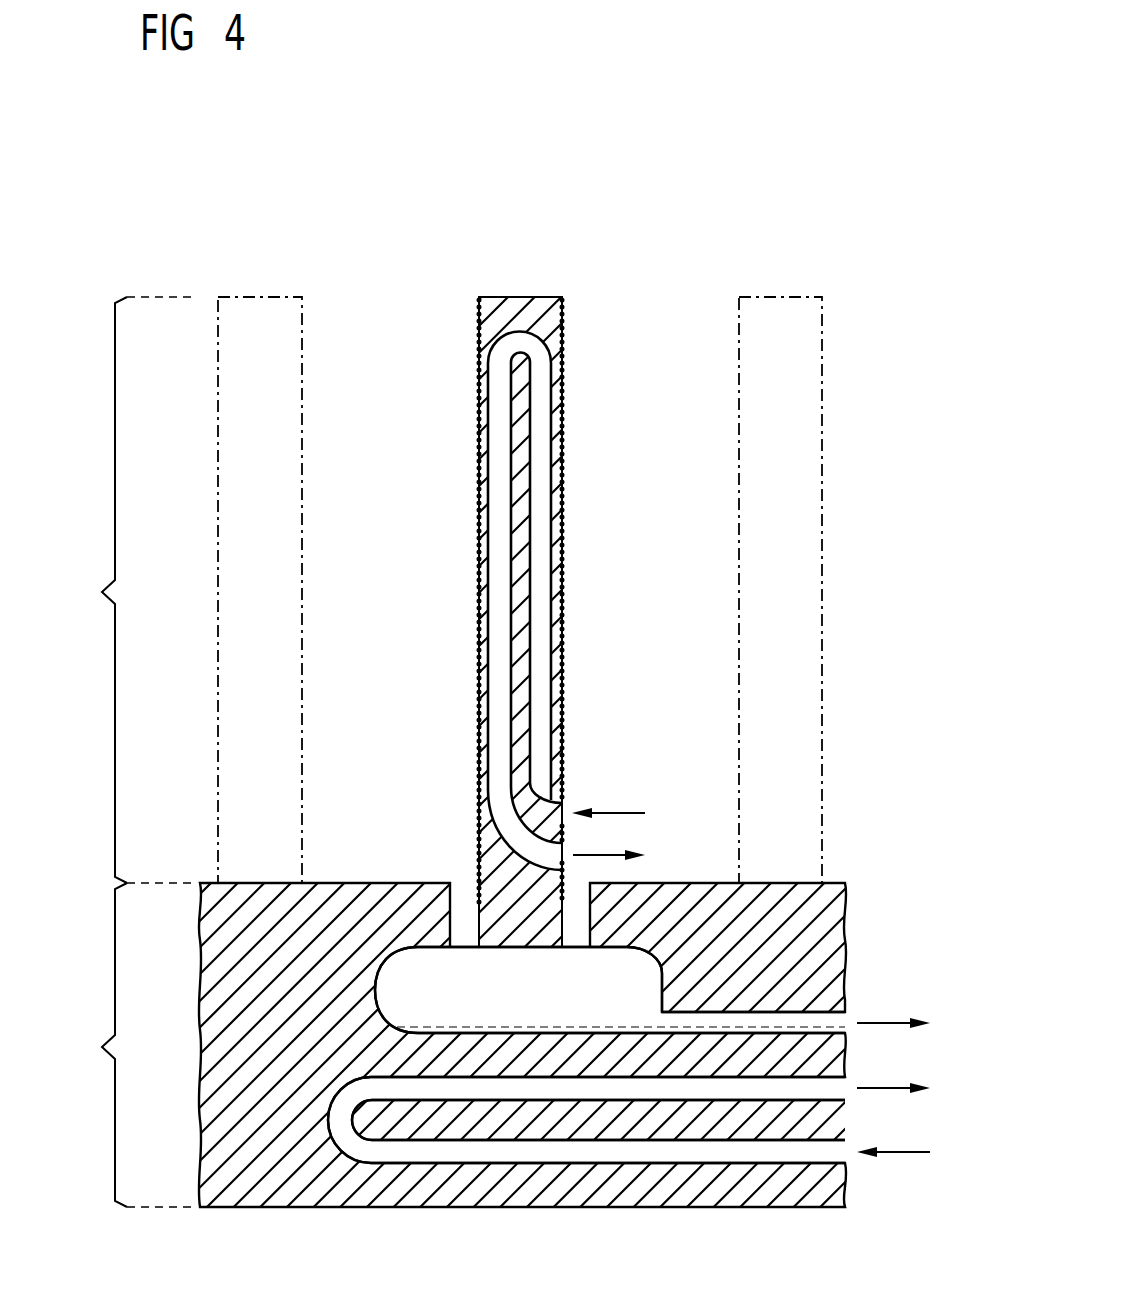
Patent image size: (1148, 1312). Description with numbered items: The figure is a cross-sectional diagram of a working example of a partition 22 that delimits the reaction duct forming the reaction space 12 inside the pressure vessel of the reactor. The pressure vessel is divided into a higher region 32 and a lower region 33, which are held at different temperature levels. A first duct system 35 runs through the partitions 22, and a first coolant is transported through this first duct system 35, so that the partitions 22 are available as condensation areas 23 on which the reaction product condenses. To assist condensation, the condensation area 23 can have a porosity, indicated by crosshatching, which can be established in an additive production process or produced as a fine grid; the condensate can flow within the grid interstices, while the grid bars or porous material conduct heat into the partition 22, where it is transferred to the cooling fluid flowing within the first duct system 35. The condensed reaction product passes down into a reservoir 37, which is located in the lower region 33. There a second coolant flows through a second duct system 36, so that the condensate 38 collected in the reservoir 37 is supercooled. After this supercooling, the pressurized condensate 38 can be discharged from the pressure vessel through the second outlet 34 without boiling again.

The reaction space 12 is at (712, 686).
The partition 22 is at (765, 297).
The condensation area 23 is at (573, 462).
The higher region 32 is at (132, 590).
The lower region 33 is at (132, 1045).
The second outlet 34 is at (820, 1018).
The first duct system 35 is at (540, 578).
The second duct system 36 is at (820, 1155).
The reservoir 37 is at (403, 977).
The condensate 38 is at (460, 1027).